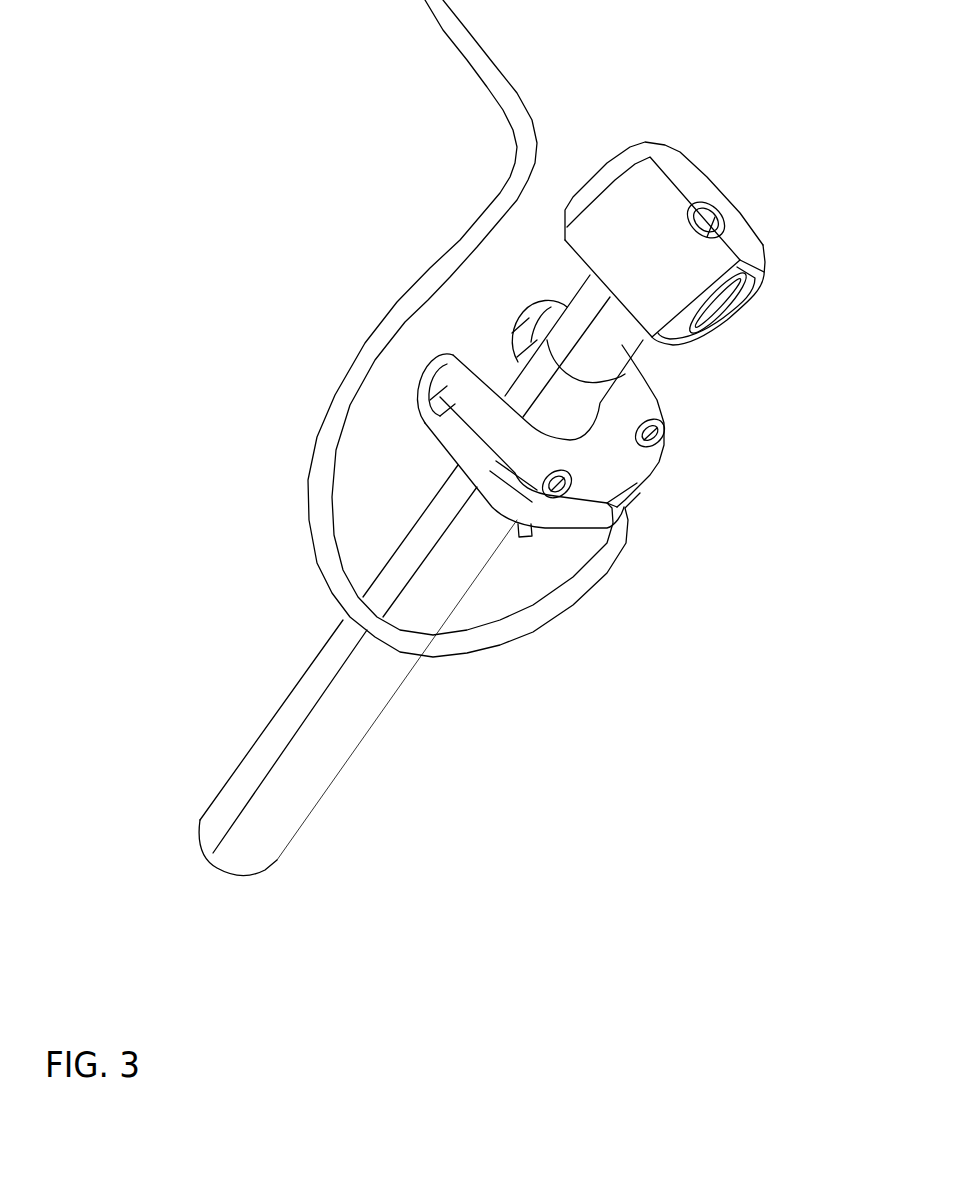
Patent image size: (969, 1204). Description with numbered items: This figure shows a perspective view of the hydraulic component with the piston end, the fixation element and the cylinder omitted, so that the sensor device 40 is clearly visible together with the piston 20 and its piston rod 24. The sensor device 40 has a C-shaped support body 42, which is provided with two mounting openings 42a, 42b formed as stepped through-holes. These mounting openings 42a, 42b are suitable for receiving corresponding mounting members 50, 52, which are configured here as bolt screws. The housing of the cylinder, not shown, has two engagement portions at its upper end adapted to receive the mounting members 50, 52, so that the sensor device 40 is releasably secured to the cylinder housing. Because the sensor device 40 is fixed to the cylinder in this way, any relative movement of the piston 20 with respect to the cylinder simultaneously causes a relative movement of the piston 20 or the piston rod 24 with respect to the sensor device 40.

The piston 20 is at (258, 651).
The piston rod 24 is at (333, 723).
The sensor device 40 is at (672, 501).
The C-shaped support body 42 is at (637, 387).
The mounting opening 42a is at (663, 435).
The mounting opening 42b is at (574, 490).
The mounting member 50 is at (652, 450).
The mounting member 52 is at (527, 528).